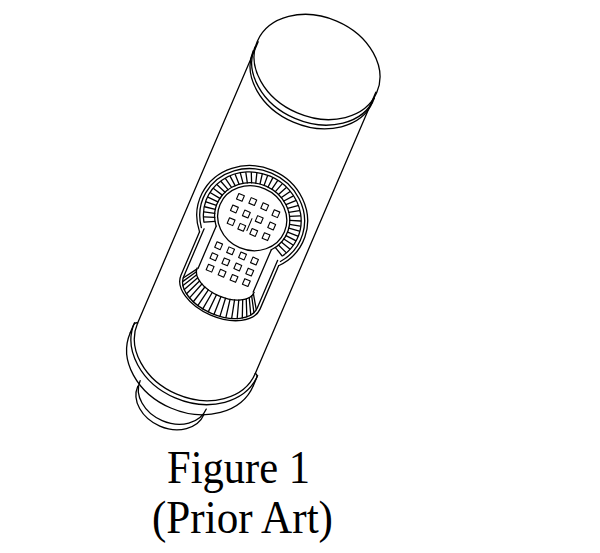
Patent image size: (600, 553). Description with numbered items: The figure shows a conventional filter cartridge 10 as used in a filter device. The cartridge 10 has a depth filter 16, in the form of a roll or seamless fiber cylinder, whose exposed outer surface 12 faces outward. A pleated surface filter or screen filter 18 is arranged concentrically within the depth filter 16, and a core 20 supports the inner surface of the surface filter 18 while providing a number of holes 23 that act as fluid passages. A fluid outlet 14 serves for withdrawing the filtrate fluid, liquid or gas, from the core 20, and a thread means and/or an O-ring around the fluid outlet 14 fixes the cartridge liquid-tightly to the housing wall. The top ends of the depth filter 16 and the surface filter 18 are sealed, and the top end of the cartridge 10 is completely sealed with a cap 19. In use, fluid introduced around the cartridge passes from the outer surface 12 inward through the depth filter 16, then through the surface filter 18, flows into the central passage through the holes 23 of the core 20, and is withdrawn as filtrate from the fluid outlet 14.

The cartridge 10 is at (253, 220).
The exposed outer surface 12 is at (217, 350).
The fluid outlet 14 is at (155, 428).
The depth filter 16 is at (310, 193).
The surface filter 18 is at (300, 247).
The cap 19 is at (343, 75).
The core 20 is at (255, 168).
The holes 23 is at (225, 247).